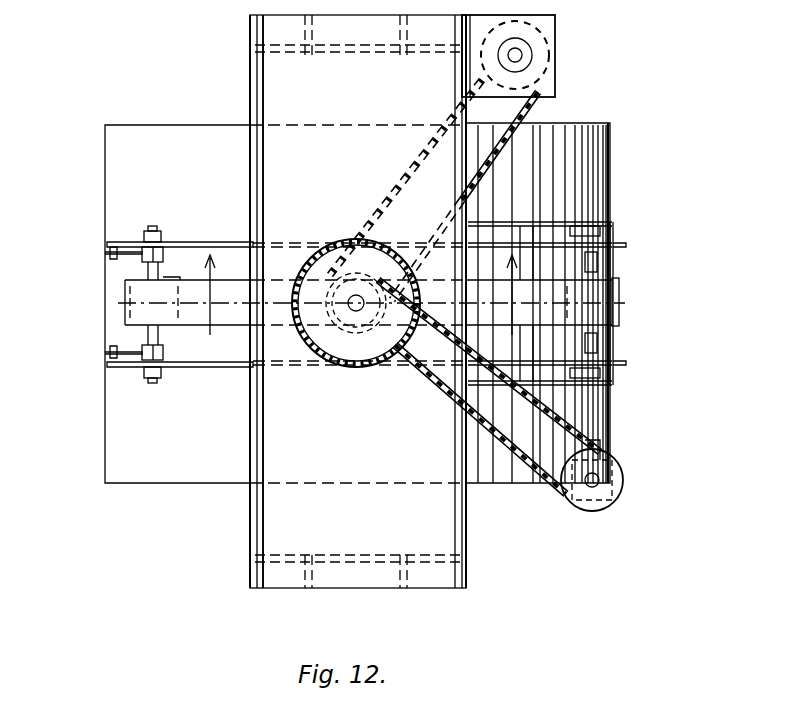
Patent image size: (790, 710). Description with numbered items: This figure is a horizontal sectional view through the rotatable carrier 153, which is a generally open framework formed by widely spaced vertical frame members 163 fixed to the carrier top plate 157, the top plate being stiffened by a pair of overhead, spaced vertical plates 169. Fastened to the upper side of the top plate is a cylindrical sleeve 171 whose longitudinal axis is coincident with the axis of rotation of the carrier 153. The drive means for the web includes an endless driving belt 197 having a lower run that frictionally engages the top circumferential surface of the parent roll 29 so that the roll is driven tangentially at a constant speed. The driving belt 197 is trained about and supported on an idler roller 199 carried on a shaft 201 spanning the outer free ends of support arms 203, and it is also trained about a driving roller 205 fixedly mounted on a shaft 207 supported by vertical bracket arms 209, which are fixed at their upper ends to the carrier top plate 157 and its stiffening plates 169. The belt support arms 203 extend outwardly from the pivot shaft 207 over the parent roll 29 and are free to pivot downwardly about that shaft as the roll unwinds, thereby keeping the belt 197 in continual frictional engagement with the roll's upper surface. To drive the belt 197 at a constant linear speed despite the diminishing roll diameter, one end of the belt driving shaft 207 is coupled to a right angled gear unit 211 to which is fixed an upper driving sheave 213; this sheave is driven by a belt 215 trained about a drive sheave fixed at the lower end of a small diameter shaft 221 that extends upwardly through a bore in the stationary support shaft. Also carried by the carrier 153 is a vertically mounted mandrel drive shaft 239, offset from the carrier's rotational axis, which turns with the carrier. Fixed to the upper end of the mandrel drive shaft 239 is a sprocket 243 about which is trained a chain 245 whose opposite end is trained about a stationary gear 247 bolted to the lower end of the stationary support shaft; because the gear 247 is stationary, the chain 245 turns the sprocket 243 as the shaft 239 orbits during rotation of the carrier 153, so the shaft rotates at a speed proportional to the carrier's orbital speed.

The parent roll 29 is at (600, 128).
The rotatable carrier 153 is at (218, 543).
The carrier top plate 157 is at (282, 63).
The vertical frame members 163 is at (305, 42).
The vertical plates 169 is at (250, 80).
The cylindrical sleeve 171 is at (303, 262).
The endless driving belt 197 is at (592, 300).
The idler roller 199 is at (142, 262).
The shaft 201 is at (152, 226).
The support arms 203 is at (120, 240).
The driving roller 205 is at (592, 345).
The shaft 207 is at (592, 262).
The vertical bracket arms 209 is at (614, 224).
The right angled gear unit 211 is at (610, 470).
The upper driving sheave 213 is at (623, 490).
The belt 215 is at (500, 462).
The small diameter shaft 221 is at (356, 305).
The mandrel drive shaft 239 is at (516, 55).
The sprocket 243 is at (552, 40).
The chain 245 is at (412, 152).
The stationary gear 247 is at (408, 243).